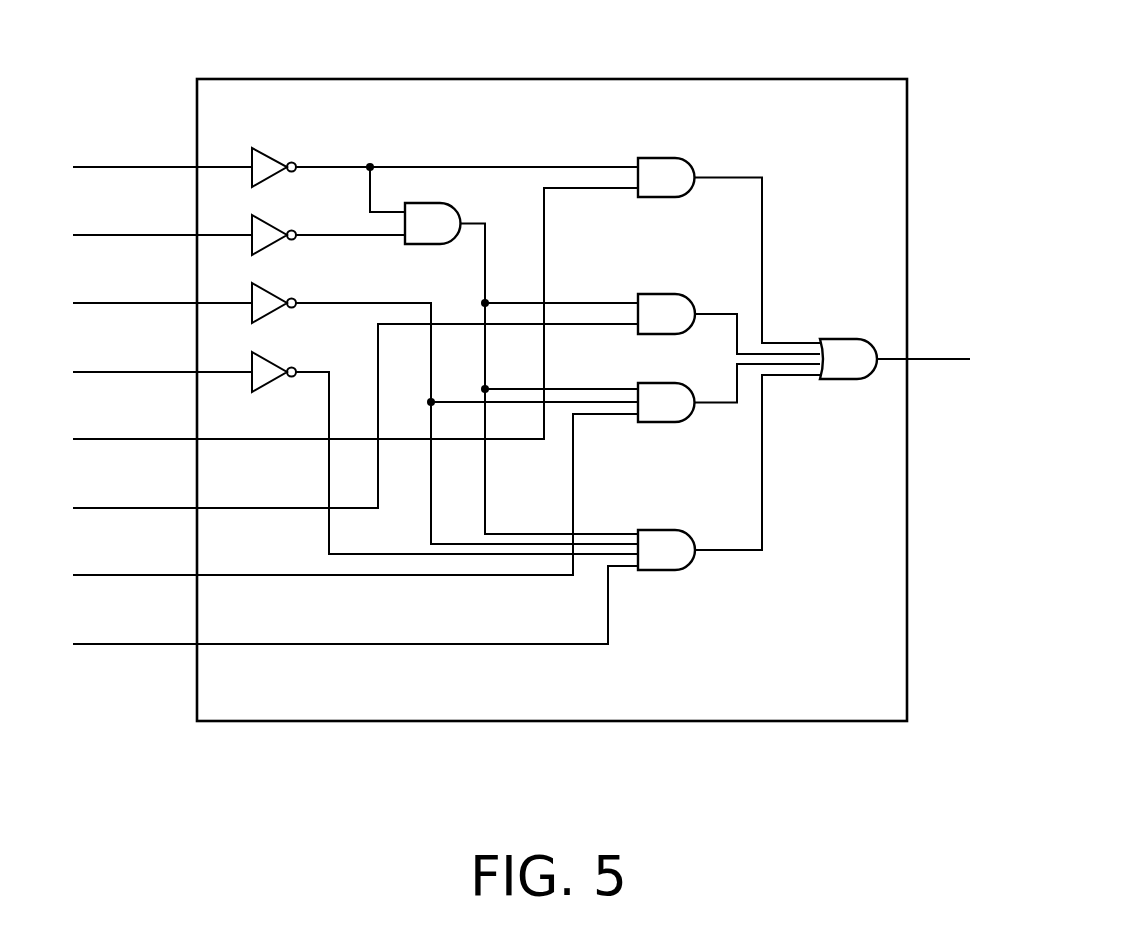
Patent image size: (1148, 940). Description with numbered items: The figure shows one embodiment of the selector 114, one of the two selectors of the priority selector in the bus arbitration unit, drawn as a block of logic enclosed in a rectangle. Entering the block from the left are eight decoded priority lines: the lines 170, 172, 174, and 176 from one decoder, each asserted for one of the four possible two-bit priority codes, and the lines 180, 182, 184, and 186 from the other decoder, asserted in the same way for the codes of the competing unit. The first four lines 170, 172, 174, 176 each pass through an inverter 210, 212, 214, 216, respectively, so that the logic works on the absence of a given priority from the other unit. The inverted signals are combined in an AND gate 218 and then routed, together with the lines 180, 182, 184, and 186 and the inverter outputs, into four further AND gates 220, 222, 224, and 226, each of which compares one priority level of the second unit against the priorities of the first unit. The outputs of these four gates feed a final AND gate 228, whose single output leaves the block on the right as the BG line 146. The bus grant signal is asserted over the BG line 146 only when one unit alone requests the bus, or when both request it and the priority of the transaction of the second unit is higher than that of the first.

The selector 114 is at (457, 79).
The BG line 146 is at (957, 356).
The line 170 is at (157, 167).
The line 172 is at (157, 235).
The line 174 is at (157, 303).
The line 176 is at (157, 372).
The line 180 is at (157, 439).
The line 182 is at (157, 508).
The line 184 is at (157, 575).
The line 186 is at (157, 644).
The inverter 210 is at (268, 150).
The inverter 212 is at (268, 218).
The inverter 214 is at (268, 286).
The inverter 216 is at (268, 355).
The AND gate 218 is at (410, 245).
The AND gate 220 is at (645, 198).
The AND gate 222 is at (643, 292).
The AND gate 224 is at (645, 423).
The AND gate 226 is at (643, 528).
The AND gate 228 is at (843, 336).